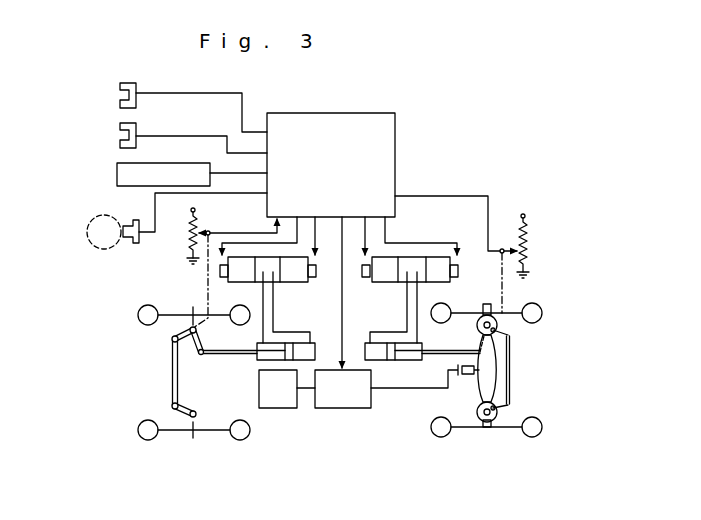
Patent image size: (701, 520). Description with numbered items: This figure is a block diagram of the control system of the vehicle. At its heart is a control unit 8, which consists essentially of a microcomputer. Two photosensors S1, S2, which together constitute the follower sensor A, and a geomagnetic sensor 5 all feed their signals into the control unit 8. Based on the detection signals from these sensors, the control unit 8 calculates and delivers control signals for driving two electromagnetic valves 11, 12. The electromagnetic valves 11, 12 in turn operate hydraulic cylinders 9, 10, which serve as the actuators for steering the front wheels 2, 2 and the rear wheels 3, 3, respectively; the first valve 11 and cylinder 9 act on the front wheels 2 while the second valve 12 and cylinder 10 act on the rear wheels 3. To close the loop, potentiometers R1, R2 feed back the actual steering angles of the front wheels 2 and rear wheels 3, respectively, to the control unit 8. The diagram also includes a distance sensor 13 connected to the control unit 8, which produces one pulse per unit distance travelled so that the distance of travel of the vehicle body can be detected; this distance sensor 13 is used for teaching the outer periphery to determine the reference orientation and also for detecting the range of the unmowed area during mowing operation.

The front wheels 2 is at (147, 327).
The rear wheels 3 is at (540, 320).
The geomagnetic sensor 5 is at (117, 172).
The control unit 8 is at (340, 118).
The hydraulic cylinder 9 is at (260, 362).
The hydraulic cylinder 10 is at (413, 362).
The electromagnetic valve 11 is at (300, 285).
The electromagnetic valve 12 is at (445, 285).
The distance sensor 13 is at (136, 245).
The follower sensor A is at (58, 140).
The photosensor S1 is at (117, 97).
The photosensor S2 is at (117, 138).
The potentiometer R1 is at (221, 268).
The potentiometer R2 is at (472, 254).